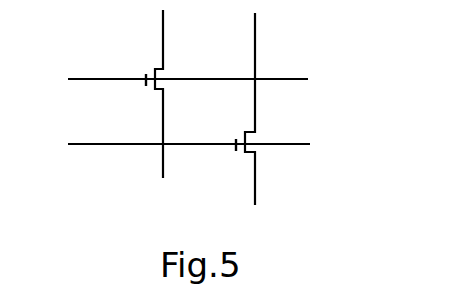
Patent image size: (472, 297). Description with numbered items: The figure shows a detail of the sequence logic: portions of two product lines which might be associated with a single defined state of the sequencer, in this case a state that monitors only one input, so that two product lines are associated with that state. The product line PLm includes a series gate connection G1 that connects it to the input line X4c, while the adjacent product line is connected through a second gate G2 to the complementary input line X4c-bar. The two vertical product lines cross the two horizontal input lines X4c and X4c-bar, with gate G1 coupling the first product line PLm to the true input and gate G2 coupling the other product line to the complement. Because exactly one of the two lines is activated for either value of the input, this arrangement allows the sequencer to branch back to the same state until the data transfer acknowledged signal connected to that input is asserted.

The series gate connection G1 is at (155, 68).
The gate connection G2 is at (245, 152).
The product line PLm is at (163, 46).
The sequence logic input line X4c is at (188, 67).
The complementary sequence logic input line X4c-bar is at (102, 116).